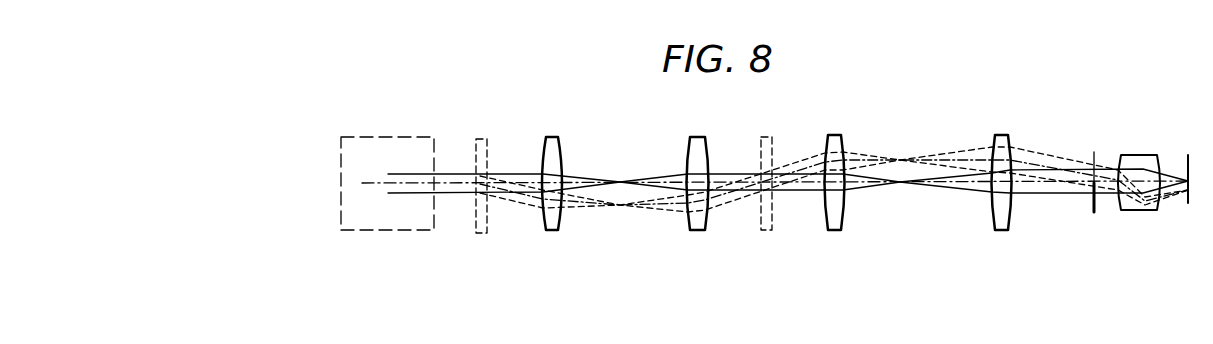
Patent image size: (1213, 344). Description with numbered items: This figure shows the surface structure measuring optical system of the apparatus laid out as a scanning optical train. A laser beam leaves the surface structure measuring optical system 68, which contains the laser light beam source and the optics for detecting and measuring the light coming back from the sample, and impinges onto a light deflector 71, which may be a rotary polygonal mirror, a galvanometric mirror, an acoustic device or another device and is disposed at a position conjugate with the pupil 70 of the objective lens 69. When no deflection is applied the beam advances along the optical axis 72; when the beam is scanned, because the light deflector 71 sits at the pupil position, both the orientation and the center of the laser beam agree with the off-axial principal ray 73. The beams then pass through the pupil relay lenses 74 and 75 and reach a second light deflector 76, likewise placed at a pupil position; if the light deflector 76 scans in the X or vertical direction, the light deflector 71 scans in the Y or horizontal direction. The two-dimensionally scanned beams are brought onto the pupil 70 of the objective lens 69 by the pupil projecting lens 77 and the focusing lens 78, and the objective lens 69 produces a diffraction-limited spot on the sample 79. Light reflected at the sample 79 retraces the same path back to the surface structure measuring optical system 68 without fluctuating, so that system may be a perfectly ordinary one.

The surface structure measuring optical system 68 is at (356, 137).
The objective lens 69 is at (1138, 210).
The pupil 70 is at (1094, 203).
The light deflector 71 is at (477, 237).
The optical axis 72 is at (530, 182).
The off-axial principal ray 73 is at (525, 197).
The pupil relay lens 74 is at (550, 230).
The pupil relay lens 75 is at (693, 232).
The light deflector 76 is at (765, 232).
The pupil projecting lens 77 is at (837, 230).
The focusing lens 78 is at (1000, 230).
The sample 79 is at (1188, 203).